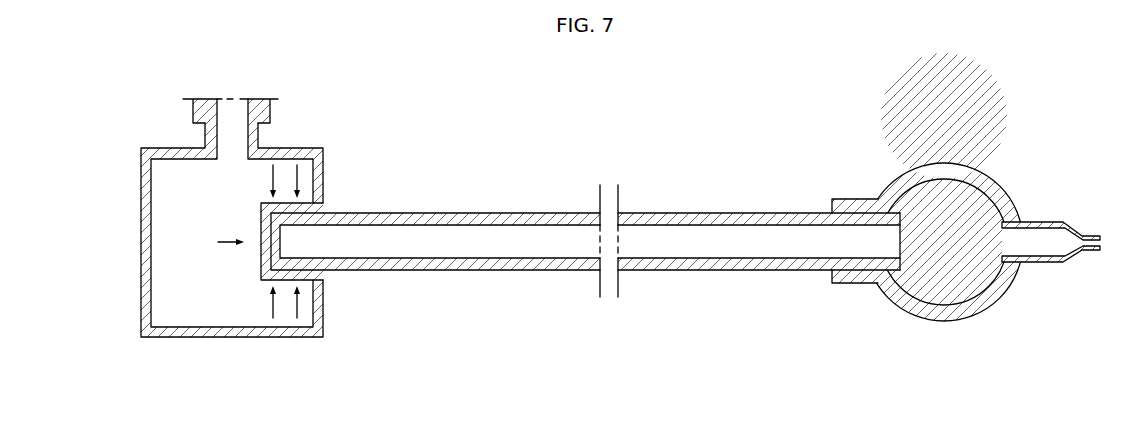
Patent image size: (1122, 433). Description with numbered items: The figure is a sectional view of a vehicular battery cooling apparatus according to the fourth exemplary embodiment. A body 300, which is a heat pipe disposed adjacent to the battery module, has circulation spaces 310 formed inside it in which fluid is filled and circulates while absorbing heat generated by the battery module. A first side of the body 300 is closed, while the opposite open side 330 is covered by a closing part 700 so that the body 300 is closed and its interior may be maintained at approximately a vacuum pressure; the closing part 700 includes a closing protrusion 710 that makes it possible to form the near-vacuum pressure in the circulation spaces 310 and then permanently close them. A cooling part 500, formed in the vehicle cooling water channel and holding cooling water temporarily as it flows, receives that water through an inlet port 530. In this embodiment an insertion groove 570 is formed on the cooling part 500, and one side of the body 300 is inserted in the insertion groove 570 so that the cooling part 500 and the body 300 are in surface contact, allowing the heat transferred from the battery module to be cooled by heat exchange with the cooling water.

The body 300 is at (686, 221).
The circulation spaces 310 is at (730, 247).
The open side 330 is at (905, 248).
The cooling part 500 is at (148, 243).
The inlet port 530 is at (252, 117).
The insertion groove 570 is at (303, 268).
The closing part 700 is at (1003, 182).
The closing protrusion 710 is at (1038, 257).